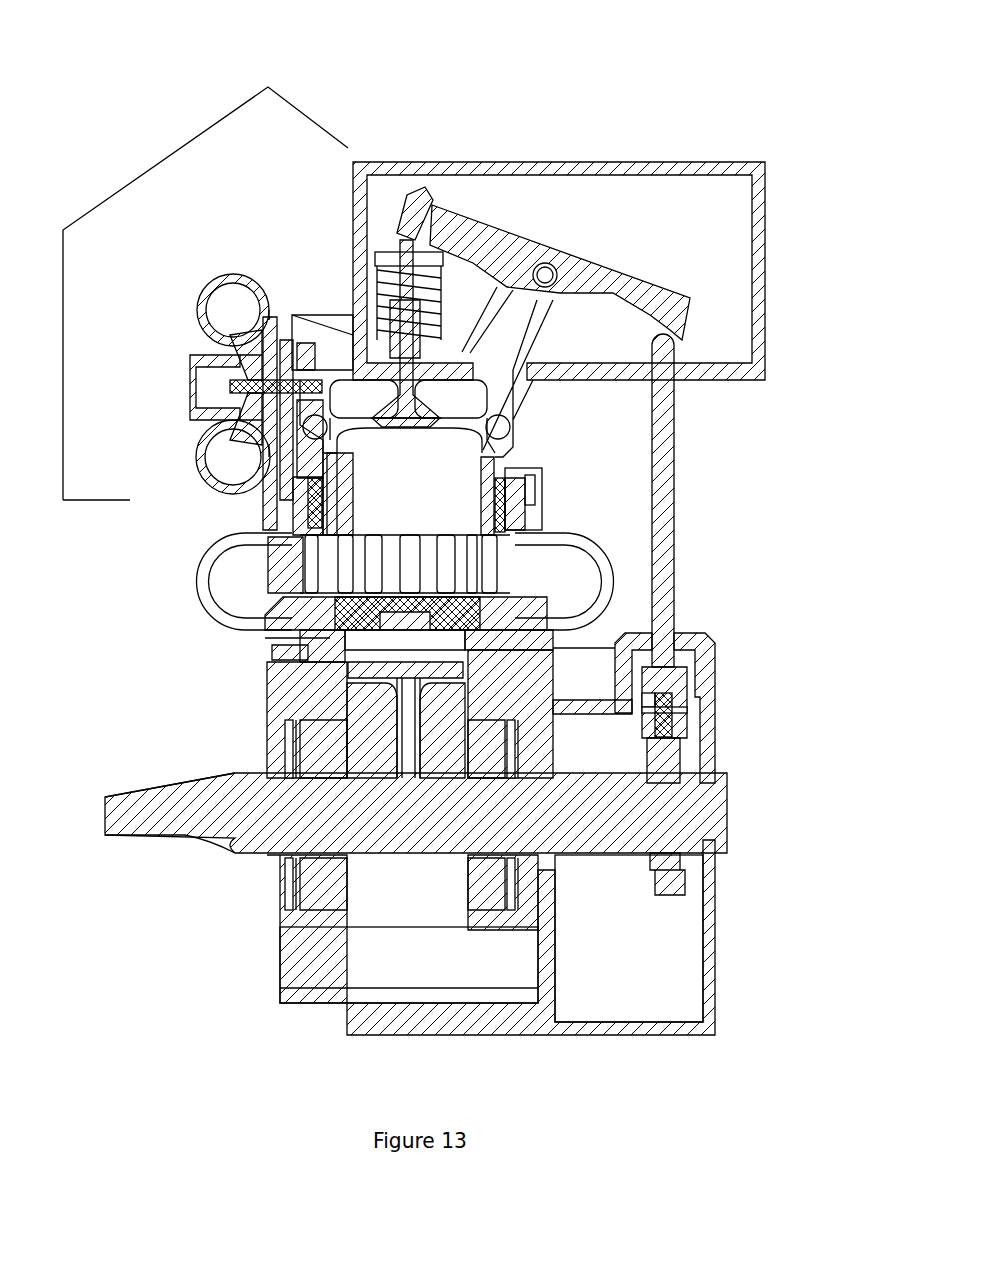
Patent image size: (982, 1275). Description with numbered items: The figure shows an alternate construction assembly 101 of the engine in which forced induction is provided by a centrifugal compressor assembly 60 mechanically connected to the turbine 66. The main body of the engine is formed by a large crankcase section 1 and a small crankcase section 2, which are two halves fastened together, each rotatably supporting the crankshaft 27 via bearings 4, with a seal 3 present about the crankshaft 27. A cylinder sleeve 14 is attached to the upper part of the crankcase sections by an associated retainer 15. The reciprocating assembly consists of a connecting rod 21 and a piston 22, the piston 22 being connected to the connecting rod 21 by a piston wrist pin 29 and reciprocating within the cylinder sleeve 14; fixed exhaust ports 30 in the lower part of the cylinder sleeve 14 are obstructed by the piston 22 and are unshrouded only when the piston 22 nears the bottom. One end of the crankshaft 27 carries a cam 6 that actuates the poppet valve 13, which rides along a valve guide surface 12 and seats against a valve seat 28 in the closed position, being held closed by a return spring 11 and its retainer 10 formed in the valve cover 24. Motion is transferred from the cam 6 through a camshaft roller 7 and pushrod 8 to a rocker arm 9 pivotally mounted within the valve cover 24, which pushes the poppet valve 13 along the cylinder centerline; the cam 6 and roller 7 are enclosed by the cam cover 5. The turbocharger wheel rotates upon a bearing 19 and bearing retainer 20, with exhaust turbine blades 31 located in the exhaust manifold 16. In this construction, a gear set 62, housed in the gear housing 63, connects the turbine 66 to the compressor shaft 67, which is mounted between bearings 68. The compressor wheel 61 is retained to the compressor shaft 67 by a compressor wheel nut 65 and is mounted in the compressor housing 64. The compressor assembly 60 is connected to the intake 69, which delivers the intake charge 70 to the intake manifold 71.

The alternate construction assembly 101 is at (150, 100).
The centrifugal compressor assembly 60 is at (140, 175).
The gear set 62 is at (262, 355).
The gear housing 63 is at (255, 328).
The bearings 68 is at (262, 333).
The intake 69 is at (290, 367).
The intake charge 70 is at (332, 340).
The compressor housing 64 is at (207, 293).
The compressor wheel nut 65 is at (233, 378).
The compressor shaft 67 is at (235, 388).
The compressor wheel 61 is at (263, 383).
The turbine 66 is at (312, 528).
The exhaust manifold 16 is at (200, 588).
The cylinder sleeve 14 is at (330, 633).
The retainer 15 is at (288, 652).
The piston wrist pin 29 is at (383, 650).
The connecting rod 21 is at (407, 760).
The crankshaft 27 is at (178, 818).
The seal 3 is at (278, 897).
The bearings 4 is at (318, 893).
The small crankcase section 2 is at (290, 1025).
The large crankcase section 1 is at (503, 1028).
The cam cover 5 is at (708, 968).
The cam 6 is at (663, 877).
The camshaft roller 7 is at (663, 718).
The pushrod 8 is at (663, 663).
The piston 22 is at (465, 615).
The exhaust turbine blades 31 is at (507, 577).
The exhaust ports 30 is at (487, 567).
The bearing 19 is at (517, 508).
The bearing retainer 20 is at (530, 480).
The valve seat 28 is at (453, 425).
The intake manifold 71 is at (520, 395).
The rocker arm 9 is at (657, 308).
The valve cover 24 is at (662, 168).
The poppet valve 13 is at (478, 277).
The valve guide surface 12 is at (405, 387).
The return spring 11 is at (420, 340).
The retainer 10 is at (387, 255).